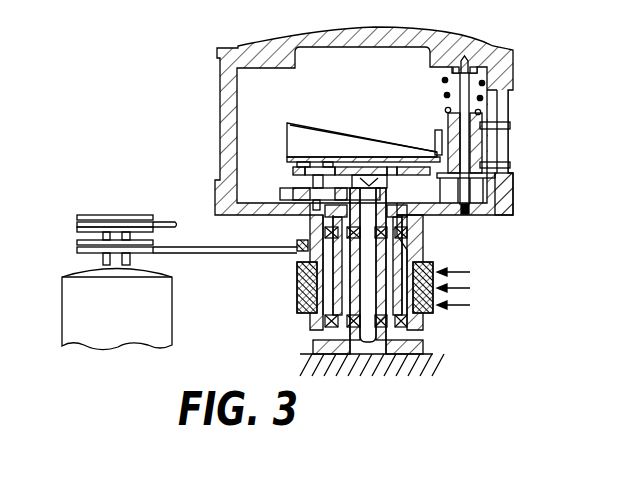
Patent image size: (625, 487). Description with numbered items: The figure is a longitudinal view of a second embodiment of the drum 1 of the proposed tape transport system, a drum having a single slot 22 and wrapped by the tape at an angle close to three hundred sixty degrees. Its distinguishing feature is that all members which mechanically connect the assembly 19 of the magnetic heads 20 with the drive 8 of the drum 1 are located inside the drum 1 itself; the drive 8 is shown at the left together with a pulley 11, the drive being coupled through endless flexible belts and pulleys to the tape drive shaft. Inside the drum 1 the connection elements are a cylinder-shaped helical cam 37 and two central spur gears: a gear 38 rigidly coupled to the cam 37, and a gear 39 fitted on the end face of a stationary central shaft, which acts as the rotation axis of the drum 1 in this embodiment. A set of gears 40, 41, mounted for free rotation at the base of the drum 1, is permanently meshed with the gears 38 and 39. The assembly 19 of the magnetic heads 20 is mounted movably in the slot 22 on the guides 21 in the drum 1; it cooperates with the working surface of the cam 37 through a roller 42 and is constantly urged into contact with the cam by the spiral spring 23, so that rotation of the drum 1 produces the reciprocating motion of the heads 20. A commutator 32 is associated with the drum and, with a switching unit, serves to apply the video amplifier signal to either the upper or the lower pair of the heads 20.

The drum 1 is at (220, 88).
The drive 8 is at (72, 308).
The pulley 11 is at (82, 223).
The assembly of magnetic heads 19 is at (480, 150).
The magnetic heads 20 is at (512, 126).
The guides 21 is at (467, 187).
The slot 22 is at (503, 103).
The spiral spring 23 is at (490, 70).
The commutator 32 is at (298, 310).
The cylinder-shaped helical cam 37 is at (308, 123).
The central spur gear 38 is at (387, 152).
The central spur gear 39 is at (420, 216).
The gear 40 is at (288, 163).
The gear 41 is at (297, 193).
The roller 42 is at (437, 130).